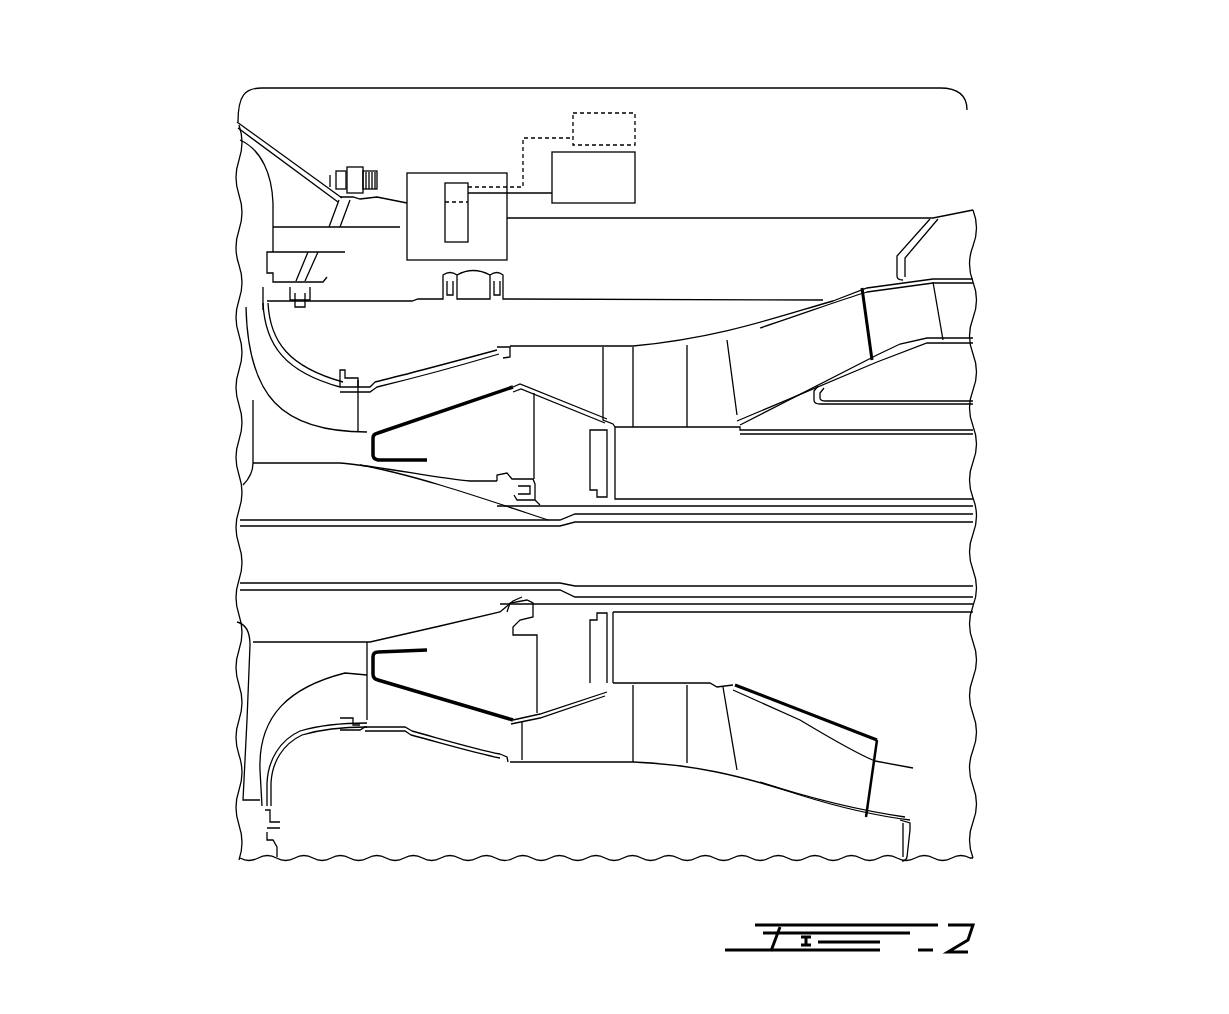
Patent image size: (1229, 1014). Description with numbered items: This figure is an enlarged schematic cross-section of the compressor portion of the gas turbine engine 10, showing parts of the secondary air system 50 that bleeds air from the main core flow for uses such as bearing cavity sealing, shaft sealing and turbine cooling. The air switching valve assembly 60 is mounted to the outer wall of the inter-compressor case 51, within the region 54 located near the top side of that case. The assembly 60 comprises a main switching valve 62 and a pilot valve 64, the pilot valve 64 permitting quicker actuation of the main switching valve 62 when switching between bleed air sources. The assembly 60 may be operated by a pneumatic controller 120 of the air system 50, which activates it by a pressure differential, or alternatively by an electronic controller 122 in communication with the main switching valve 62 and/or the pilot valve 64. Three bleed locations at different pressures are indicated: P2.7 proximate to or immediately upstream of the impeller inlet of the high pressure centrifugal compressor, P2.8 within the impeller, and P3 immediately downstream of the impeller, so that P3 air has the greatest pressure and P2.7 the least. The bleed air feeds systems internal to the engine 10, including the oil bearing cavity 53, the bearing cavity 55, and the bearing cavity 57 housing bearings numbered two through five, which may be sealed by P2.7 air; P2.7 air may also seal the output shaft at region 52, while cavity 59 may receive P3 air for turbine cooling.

The gas turbine engine 10 is at (1055, 158).
The secondary air system 50 is at (604, 88).
The inter-compressor case 51 is at (395, 197).
The output shaft sealing region 52 is at (583, 517).
The bearing cavity 53 is at (797, 453).
The region 54 is at (428, 170).
The bearing cavity 55 is at (303, 235).
The bearing cavity 57 is at (888, 416).
The cavity 59 is at (287, 197).
The air switching valve assembly 60 is at (457, 184).
The main switching valve 62 is at (463, 222).
The pilot valve 64 is at (450, 188).
The pneumatic controller 120 is at (551, 177).
The electronic controller 122 is at (551, 150).
The P3 bleed location P3 is at (255, 810).
The P2.8 bleed location P2.8 is at (307, 727).
The P2.7 bleed location P2.7 is at (373, 693).